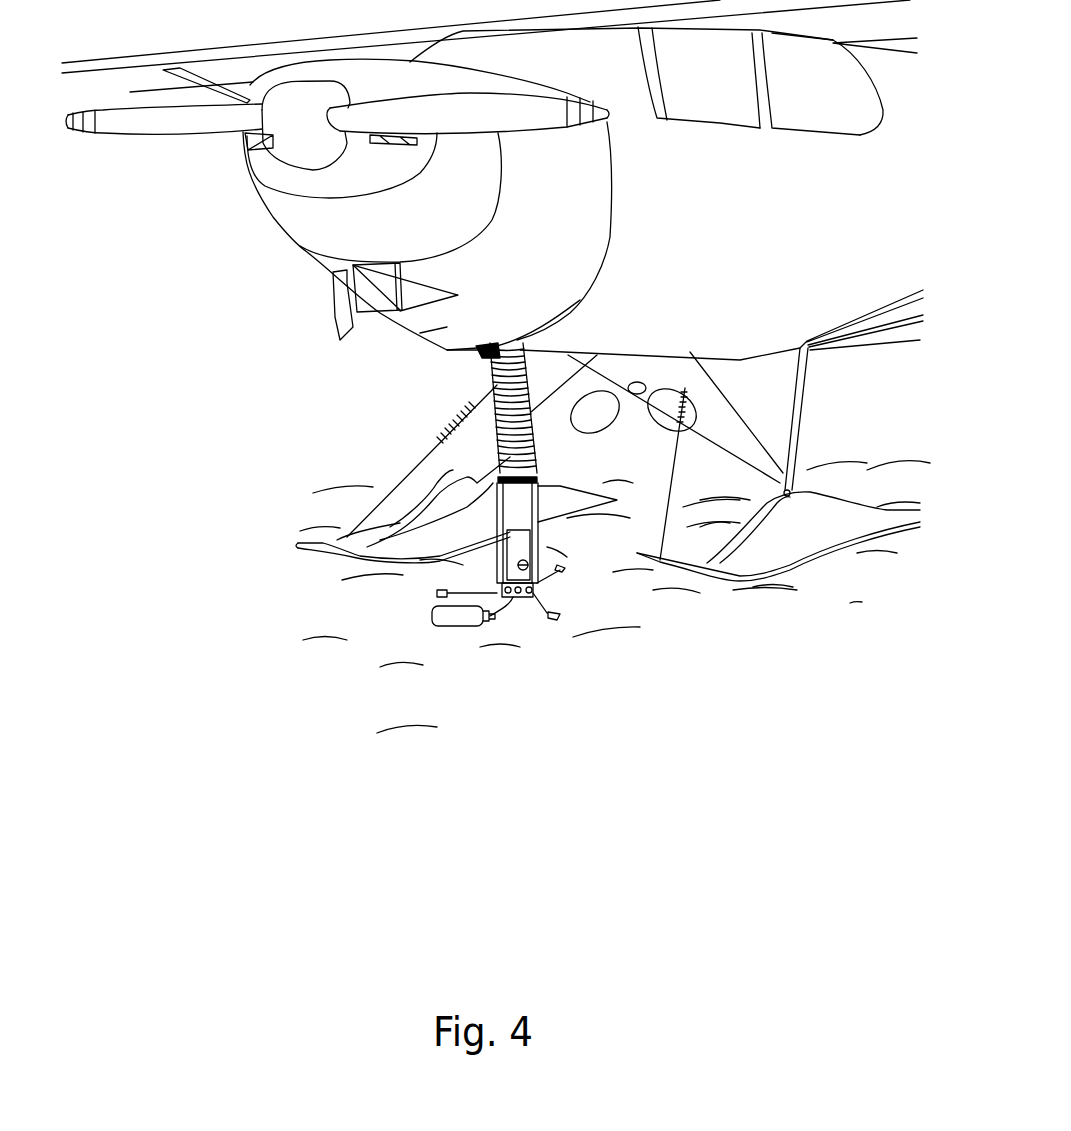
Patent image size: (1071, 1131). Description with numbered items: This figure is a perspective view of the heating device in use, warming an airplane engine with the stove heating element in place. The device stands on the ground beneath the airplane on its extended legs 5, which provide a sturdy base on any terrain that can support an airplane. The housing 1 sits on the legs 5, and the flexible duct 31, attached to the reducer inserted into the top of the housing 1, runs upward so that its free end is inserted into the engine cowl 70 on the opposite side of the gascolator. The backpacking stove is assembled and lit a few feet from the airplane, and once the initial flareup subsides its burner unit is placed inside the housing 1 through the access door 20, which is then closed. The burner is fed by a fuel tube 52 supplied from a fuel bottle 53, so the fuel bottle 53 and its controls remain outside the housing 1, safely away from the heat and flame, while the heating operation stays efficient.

The housing 1 is at (543, 545).
The legs 5 is at (423, 592).
The access door 20 is at (520, 572).
The flexible duct 31 is at (480, 370).
The fuel tube 52 is at (517, 613).
The fuel bottle 53 is at (452, 630).
The engine cowl 70 is at (447, 328).